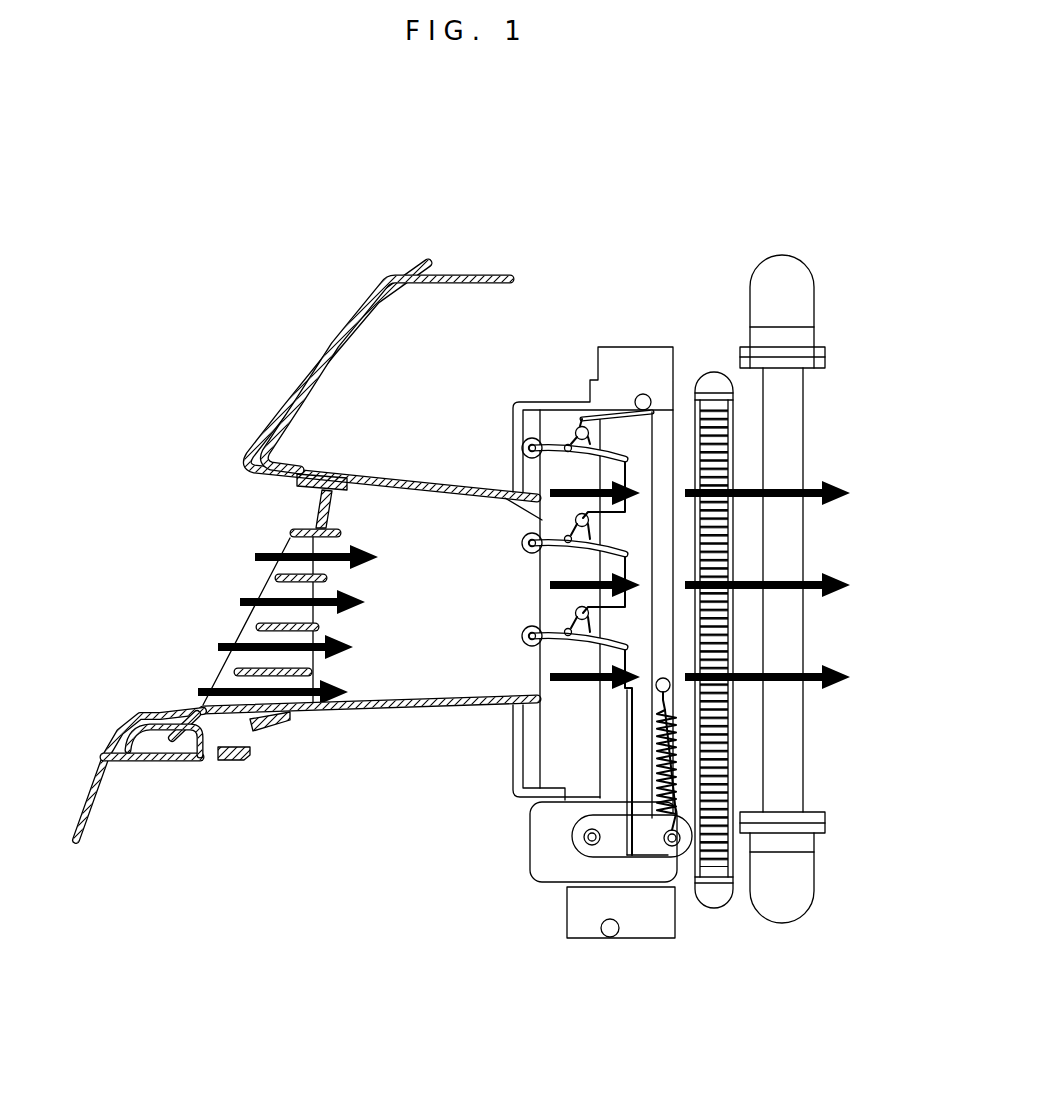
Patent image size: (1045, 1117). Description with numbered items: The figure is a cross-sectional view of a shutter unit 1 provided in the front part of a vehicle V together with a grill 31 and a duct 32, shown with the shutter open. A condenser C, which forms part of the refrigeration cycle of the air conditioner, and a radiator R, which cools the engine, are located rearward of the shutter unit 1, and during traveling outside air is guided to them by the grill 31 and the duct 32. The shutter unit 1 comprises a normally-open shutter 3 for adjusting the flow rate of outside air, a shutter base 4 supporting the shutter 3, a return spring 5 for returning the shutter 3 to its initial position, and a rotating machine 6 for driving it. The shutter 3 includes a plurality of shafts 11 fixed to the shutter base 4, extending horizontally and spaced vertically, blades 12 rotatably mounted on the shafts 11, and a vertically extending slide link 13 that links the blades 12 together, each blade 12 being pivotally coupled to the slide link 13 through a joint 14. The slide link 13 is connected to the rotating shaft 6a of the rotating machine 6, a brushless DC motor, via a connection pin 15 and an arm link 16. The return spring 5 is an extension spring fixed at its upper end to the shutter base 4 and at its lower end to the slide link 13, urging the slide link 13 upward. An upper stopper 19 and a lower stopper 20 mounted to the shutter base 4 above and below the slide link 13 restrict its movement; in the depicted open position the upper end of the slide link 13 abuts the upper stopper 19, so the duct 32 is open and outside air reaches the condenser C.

The shutter unit 1 is at (548, 988).
The shutter 3 is at (511, 561).
The shutter base 4 is at (560, 403).
The return spring 5 is at (660, 735).
The rotating machine 6 is at (513, 828).
The rotating shaft 6a is at (585, 838).
The shaft 11 is at (522, 537).
The blade 12 is at (543, 522).
The slide link 13 is at (640, 432).
The joint 14 is at (560, 625).
The connection pin 15 is at (673, 847).
The arm link 16 is at (600, 852).
The upper stopper 19 is at (643, 394).
The lower stopper 20 is at (610, 937).
The grill 31 is at (280, 523).
The duct 32 is at (355, 722).
The vehicle V is at (322, 240).
The radiator R is at (792, 425).
The condenser C is at (722, 750).